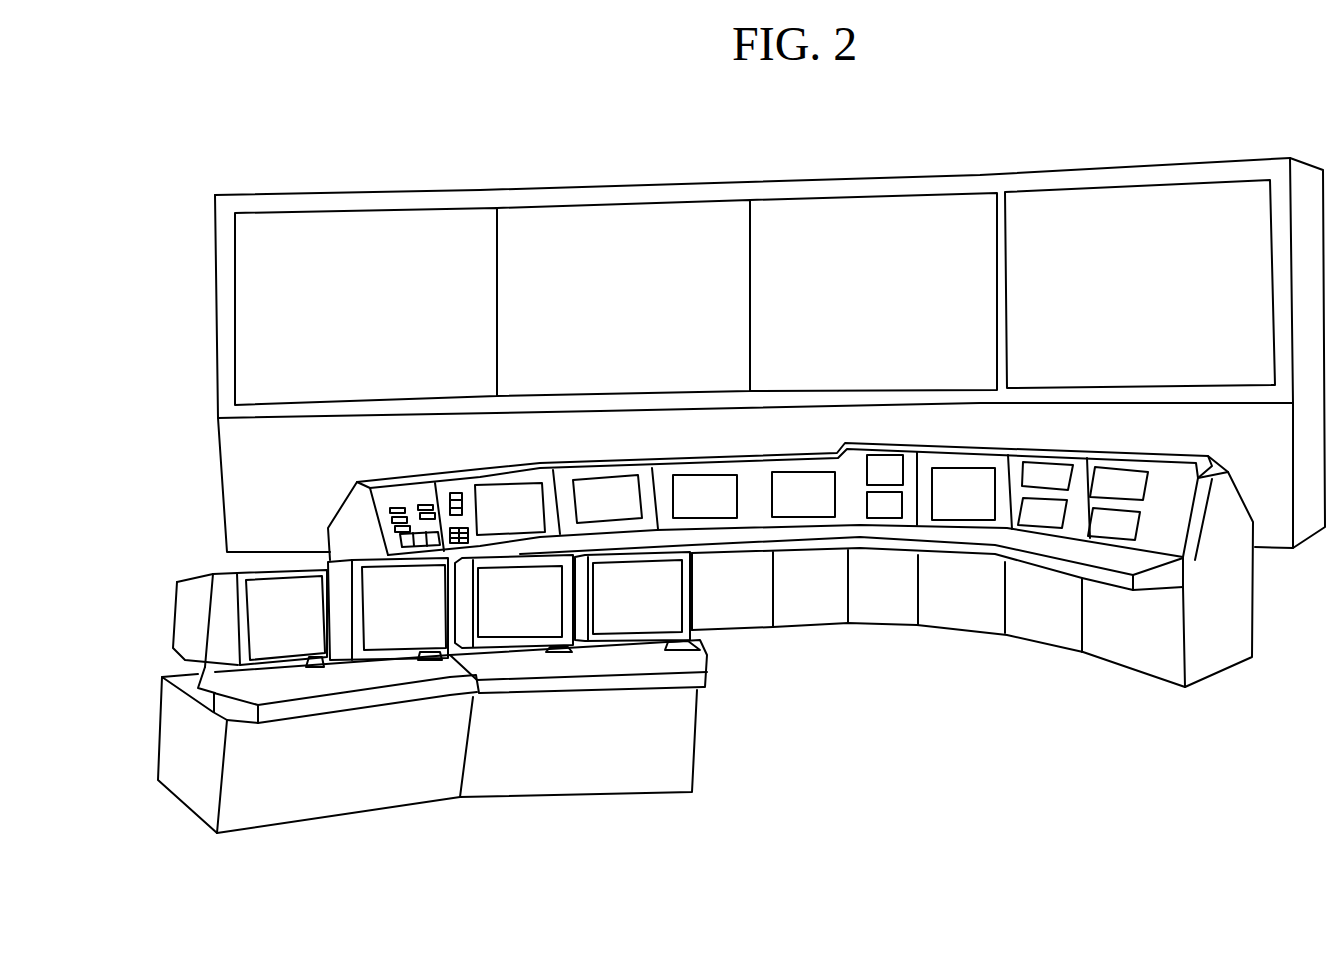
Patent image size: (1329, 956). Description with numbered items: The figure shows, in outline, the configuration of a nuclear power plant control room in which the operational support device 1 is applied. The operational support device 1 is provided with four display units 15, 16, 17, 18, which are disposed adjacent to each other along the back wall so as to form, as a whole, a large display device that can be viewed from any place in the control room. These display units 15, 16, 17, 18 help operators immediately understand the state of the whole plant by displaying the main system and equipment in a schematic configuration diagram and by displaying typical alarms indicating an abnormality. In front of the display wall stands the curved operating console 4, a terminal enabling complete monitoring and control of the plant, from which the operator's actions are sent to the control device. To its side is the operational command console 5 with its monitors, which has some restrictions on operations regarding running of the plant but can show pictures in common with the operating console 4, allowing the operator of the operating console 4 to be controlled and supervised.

The operational support device 1 is at (262, 175).
The display unit 15 is at (372, 225).
The display unit 16 is at (630, 225).
The display unit 17 is at (883, 218).
The display unit 18 is at (1152, 210).
The operating console 4 is at (1118, 668).
The operational command console 5 is at (188, 778).